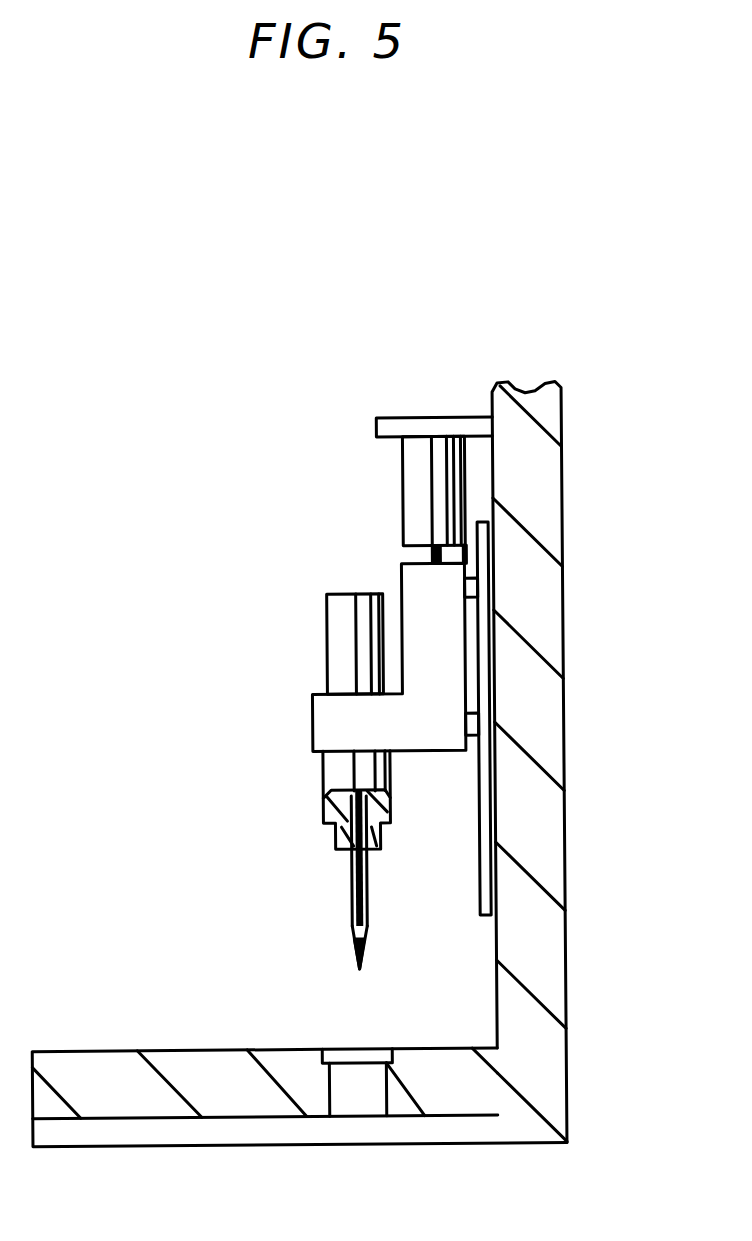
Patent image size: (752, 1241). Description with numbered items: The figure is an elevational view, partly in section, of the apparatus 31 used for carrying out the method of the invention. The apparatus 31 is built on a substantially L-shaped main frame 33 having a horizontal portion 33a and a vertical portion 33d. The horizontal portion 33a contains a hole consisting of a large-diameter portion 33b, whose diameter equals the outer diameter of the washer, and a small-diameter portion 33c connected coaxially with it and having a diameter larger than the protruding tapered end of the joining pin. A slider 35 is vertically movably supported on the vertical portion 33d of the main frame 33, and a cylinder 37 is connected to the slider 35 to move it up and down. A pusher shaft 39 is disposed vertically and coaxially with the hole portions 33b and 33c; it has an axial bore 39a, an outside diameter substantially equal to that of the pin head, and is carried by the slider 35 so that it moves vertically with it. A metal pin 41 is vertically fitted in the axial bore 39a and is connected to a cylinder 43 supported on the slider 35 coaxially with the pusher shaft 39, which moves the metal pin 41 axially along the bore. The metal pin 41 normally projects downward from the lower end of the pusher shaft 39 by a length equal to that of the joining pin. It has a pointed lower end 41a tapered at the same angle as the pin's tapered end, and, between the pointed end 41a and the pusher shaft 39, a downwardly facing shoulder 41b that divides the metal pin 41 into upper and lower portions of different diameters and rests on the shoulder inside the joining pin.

The apparatus 31 is at (192, 498).
The main frame 33 is at (561, 893).
The horizontal portion 33a is at (90, 1065).
The large-diameter portion 33b is at (332, 1047).
The small-diameter portion 33c is at (330, 1095).
The vertical portion 33d is at (533, 670).
The slider 35 is at (423, 592).
The cylinder 37 is at (422, 482).
The pusher shaft 39 is at (340, 772).
The axial bore 39a is at (385, 812).
The metal pin 41 is at (350, 860).
The pointed lower end 41a is at (365, 967).
The shoulder 41b is at (355, 933).
The cylinder 43 is at (347, 645).